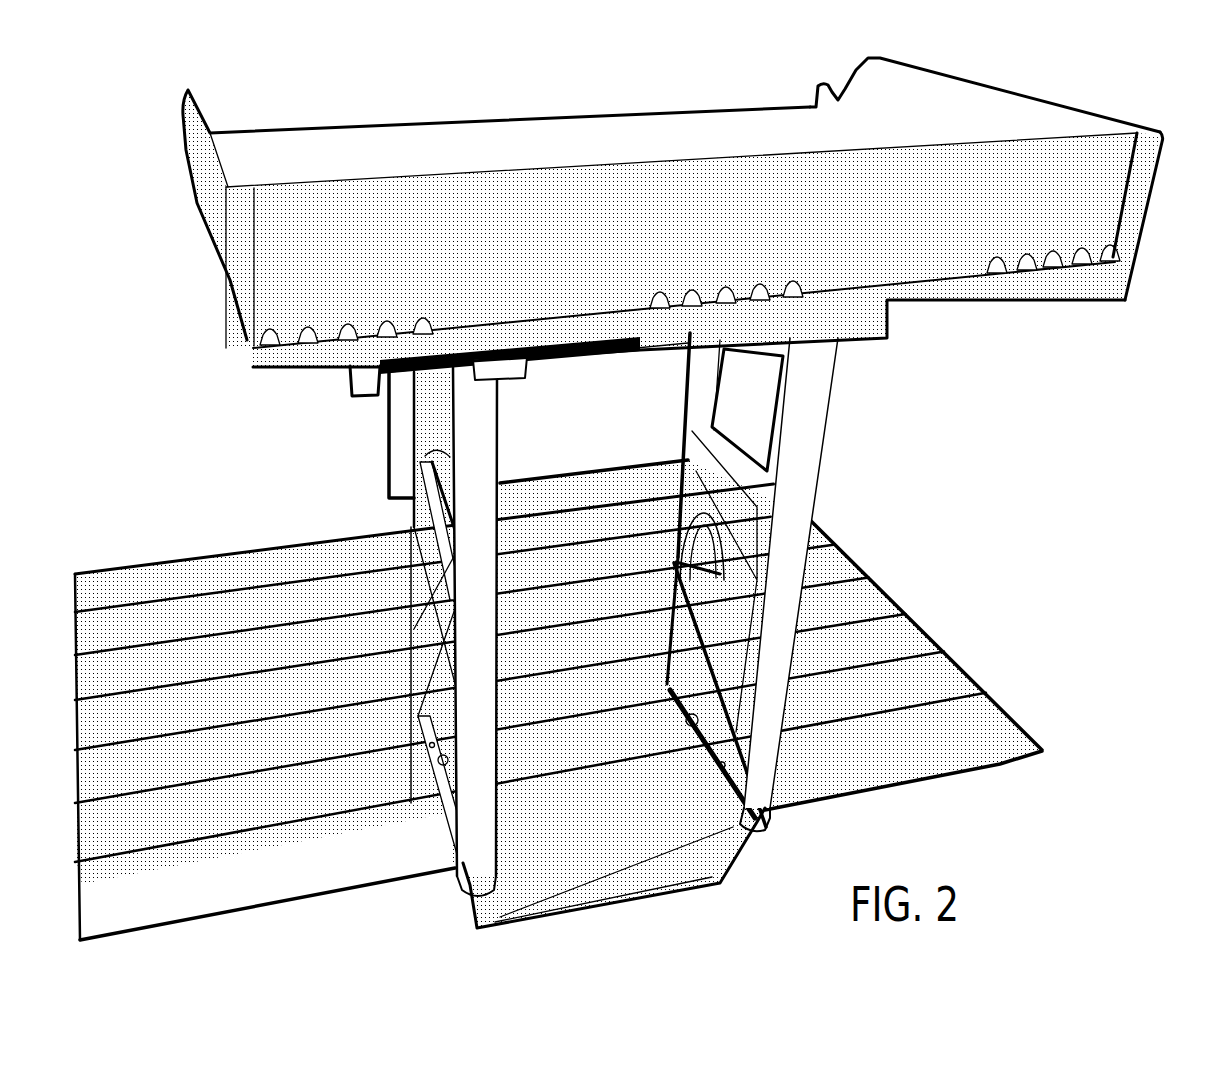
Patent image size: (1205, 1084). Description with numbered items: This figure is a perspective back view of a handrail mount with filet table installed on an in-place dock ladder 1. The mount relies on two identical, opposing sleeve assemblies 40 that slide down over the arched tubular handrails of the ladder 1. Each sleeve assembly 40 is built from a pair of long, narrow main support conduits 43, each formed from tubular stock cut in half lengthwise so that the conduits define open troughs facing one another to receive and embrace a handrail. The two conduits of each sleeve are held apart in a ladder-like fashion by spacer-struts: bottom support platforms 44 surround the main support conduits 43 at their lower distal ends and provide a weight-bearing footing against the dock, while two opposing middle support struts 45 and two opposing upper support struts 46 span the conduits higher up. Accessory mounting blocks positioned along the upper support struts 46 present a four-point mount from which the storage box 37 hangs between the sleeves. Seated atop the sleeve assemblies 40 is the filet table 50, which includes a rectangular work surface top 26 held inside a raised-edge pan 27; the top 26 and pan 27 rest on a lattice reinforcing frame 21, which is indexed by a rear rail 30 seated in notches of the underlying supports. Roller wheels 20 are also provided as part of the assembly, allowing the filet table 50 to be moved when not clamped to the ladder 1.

The dock ladder 1 is at (452, 562).
The roller wheels 20 is at (345, 390).
The lattice reinforcing frame 21 is at (935, 302).
The work surface top 26 is at (428, 161).
The raised-edge pan 27 is at (897, 99).
The rear rail 30 is at (598, 350).
The storage box 37 is at (615, 419).
The sleeve assemblies 40 is at (558, 650).
The main support conduits 43 is at (491, 679).
The bottom support platforms 44 is at (492, 905).
The middle support struts 45 is at (442, 700).
The upper support struts 46 is at (418, 630).
The filet table 50 is at (673, 244).